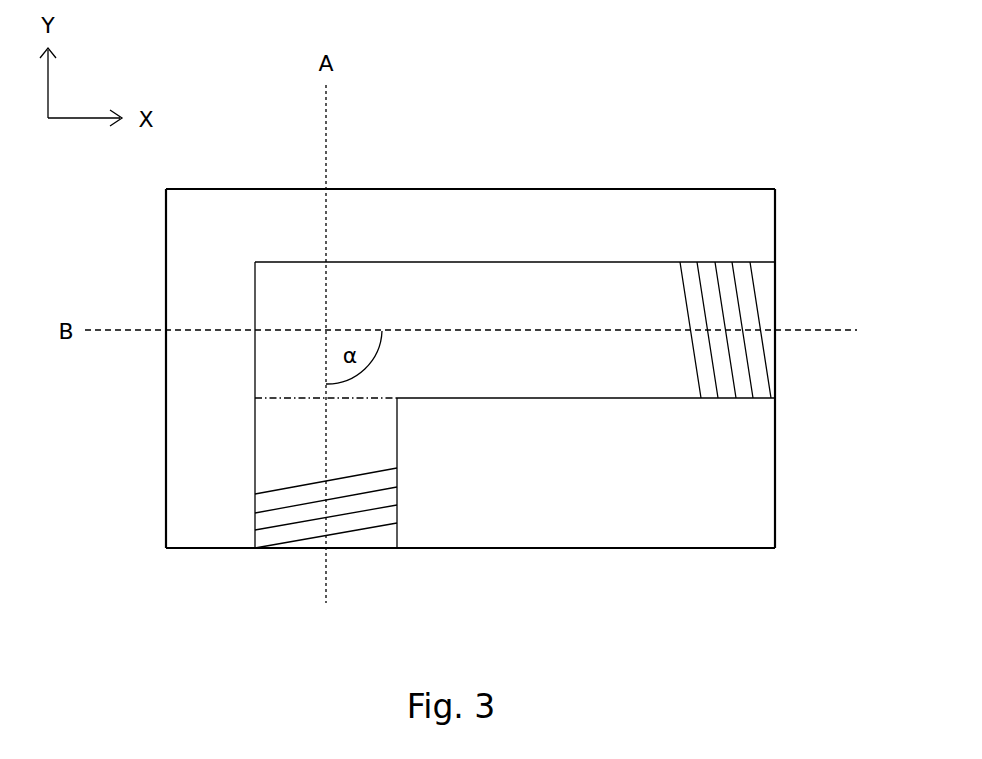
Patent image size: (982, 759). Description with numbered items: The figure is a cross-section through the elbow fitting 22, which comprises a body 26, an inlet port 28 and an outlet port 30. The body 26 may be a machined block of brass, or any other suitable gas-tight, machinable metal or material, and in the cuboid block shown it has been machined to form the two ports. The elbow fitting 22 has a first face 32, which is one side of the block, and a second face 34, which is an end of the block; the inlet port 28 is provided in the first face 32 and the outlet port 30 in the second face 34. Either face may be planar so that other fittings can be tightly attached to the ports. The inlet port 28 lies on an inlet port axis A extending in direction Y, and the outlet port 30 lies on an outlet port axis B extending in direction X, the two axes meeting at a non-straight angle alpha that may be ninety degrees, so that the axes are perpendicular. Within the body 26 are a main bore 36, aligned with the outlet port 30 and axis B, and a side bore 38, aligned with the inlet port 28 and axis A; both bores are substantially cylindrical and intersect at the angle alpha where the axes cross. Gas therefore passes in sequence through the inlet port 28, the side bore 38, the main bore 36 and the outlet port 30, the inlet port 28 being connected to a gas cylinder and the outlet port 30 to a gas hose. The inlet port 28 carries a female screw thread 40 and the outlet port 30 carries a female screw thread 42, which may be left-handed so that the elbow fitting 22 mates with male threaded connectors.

The elbow fitting 22 is at (494, 358).
The body 26 is at (433, 233).
The inlet port 28 is at (285, 548).
The outlet port 30 is at (775, 290).
The first face 32 is at (603, 548).
The second face 34 is at (775, 523).
The main bore 36 is at (585, 262).
The side bore 38 is at (255, 448).
The female screw thread 40 is at (373, 528).
The female screw thread 42 is at (750, 372).